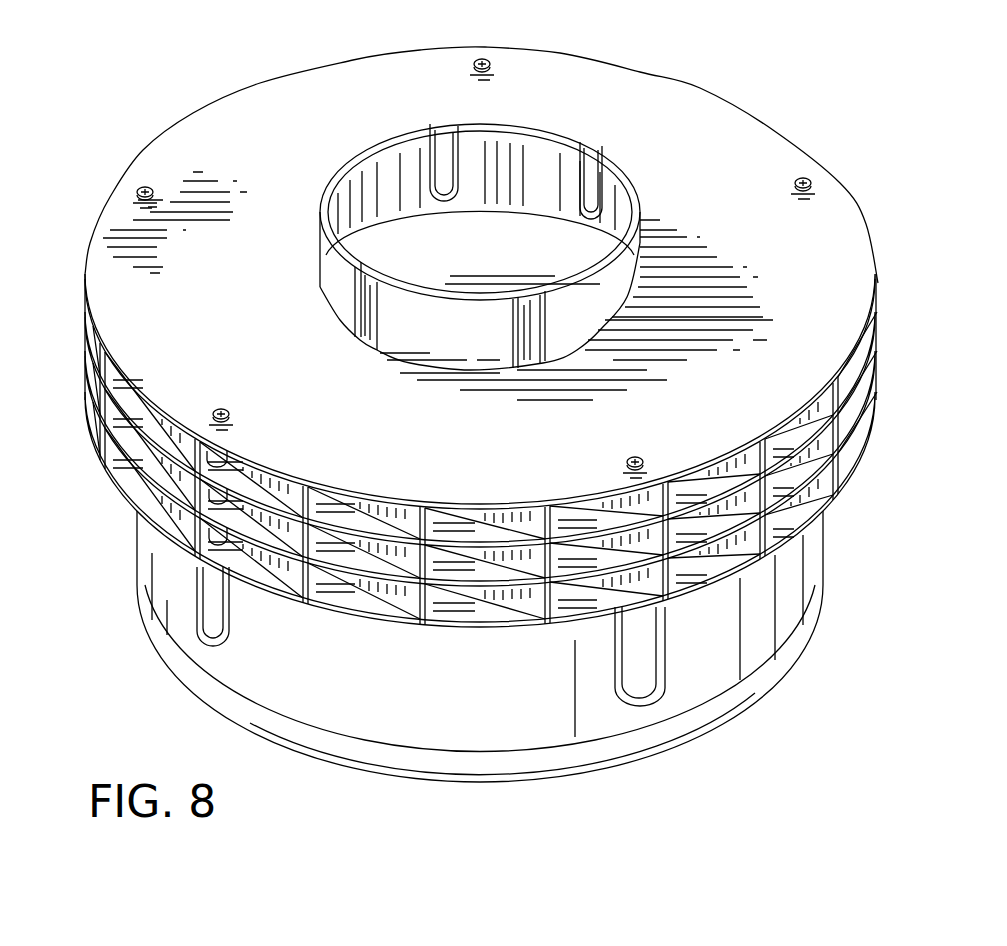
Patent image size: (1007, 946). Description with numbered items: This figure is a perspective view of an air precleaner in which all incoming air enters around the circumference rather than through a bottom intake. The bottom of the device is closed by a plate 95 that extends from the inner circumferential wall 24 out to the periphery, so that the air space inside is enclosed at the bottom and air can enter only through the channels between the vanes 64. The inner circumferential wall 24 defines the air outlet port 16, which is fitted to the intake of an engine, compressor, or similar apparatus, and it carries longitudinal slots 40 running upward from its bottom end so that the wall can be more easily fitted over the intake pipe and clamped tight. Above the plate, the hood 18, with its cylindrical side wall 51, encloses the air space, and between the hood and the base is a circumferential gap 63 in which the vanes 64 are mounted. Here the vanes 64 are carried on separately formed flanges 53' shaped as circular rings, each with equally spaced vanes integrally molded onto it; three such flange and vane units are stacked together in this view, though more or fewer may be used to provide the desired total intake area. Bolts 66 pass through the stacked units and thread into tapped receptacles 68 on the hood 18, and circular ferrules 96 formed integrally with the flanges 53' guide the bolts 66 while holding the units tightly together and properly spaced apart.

The air outlet port 16 is at (320, 210).
The hood 18 is at (745, 713).
The inner circumferential wall 24 is at (612, 293).
The longitudinal slots 40 is at (443, 147).
The cylindrical side wall 51 is at (790, 603).
The flanges 53' is at (459, 450).
The circumferential gap 63 is at (473, 570).
The vanes 64 is at (393, 595).
The bolts 66 is at (145, 187).
The tapped receptacles 68 is at (197, 623).
The plate 95 is at (687, 123).
The circular ferrules 96 is at (213, 533).